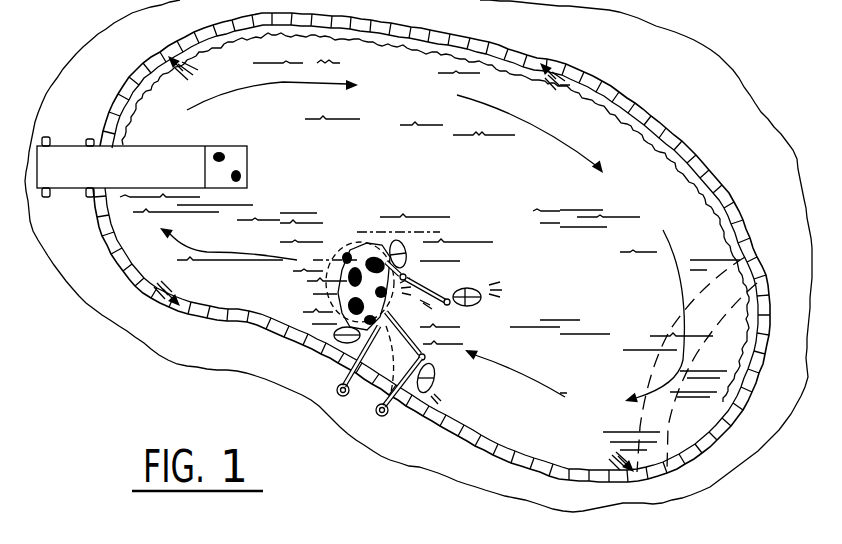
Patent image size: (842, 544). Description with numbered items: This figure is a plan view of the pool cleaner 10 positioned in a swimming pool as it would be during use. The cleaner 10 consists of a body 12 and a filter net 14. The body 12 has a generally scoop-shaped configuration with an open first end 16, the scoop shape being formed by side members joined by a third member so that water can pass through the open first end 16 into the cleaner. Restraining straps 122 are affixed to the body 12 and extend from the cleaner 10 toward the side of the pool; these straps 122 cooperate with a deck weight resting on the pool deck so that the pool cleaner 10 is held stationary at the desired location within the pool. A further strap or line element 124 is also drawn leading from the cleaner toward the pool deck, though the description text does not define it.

The swimming pool cleaning system 10 is at (434, 205).
The float 12 is at (438, 288).
The pool cleaner 14 is at (357, 250).
The swivel joint 16 is at (455, 317).
The hose 122 is at (352, 345).
The hose 124 is at (377, 411).